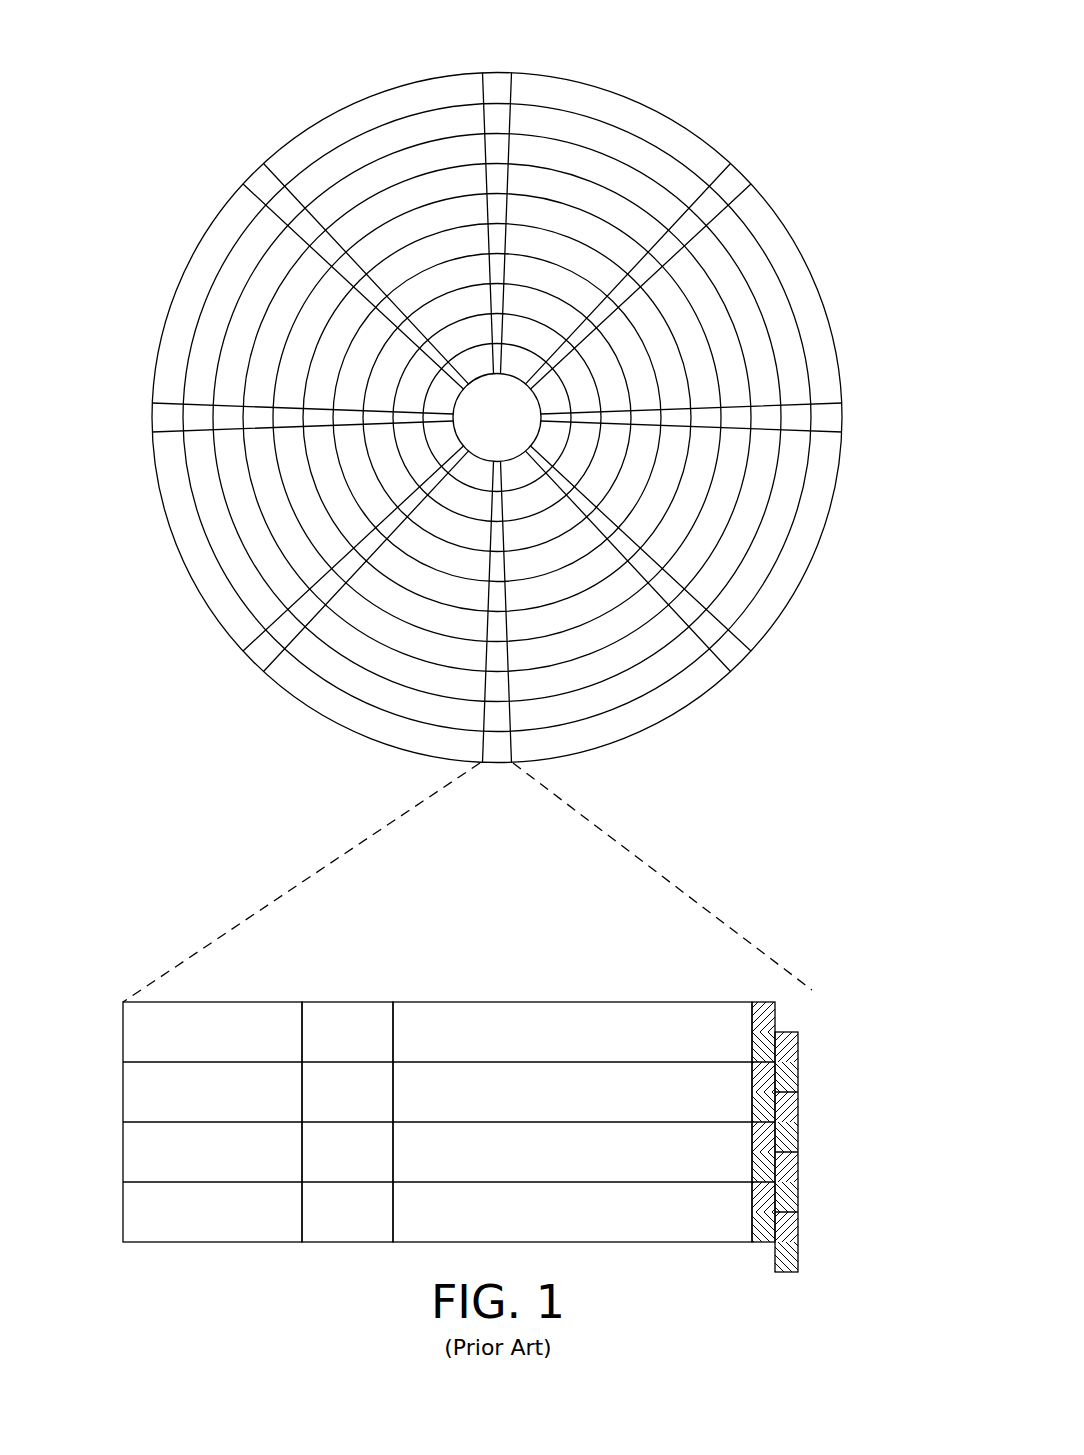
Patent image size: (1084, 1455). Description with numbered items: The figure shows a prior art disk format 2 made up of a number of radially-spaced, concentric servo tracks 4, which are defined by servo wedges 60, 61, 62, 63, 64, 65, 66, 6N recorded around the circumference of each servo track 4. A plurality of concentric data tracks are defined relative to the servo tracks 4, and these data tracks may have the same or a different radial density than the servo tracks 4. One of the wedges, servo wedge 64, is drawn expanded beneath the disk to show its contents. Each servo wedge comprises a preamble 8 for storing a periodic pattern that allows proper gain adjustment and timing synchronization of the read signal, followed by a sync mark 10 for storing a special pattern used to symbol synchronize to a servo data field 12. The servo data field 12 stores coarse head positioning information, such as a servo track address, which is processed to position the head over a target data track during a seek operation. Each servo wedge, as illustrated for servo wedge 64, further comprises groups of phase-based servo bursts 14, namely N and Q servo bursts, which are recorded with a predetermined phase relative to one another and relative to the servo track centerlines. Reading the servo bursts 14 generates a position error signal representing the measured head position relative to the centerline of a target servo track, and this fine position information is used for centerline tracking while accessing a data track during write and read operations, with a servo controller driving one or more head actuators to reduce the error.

The disk format 2 is at (238, 74).
The servo track 4 is at (615, 142).
The servo wedge 60 is at (498, 80).
The servo wedge 61 is at (740, 175).
The servo wedge 62 is at (834, 418).
The servo wedge 63 is at (740, 660).
The servo wedge 64 is at (342, 838).
The servo wedge 65 is at (258, 658).
The servo wedge 66 is at (160, 418).
The servo wedge 6N is at (258, 176).
The preamble 8 is at (220, 1001).
The sync mark 10 is at (350, 1001).
The servo data field 12 is at (558, 1001).
The servo bursts 14 is at (797, 997).